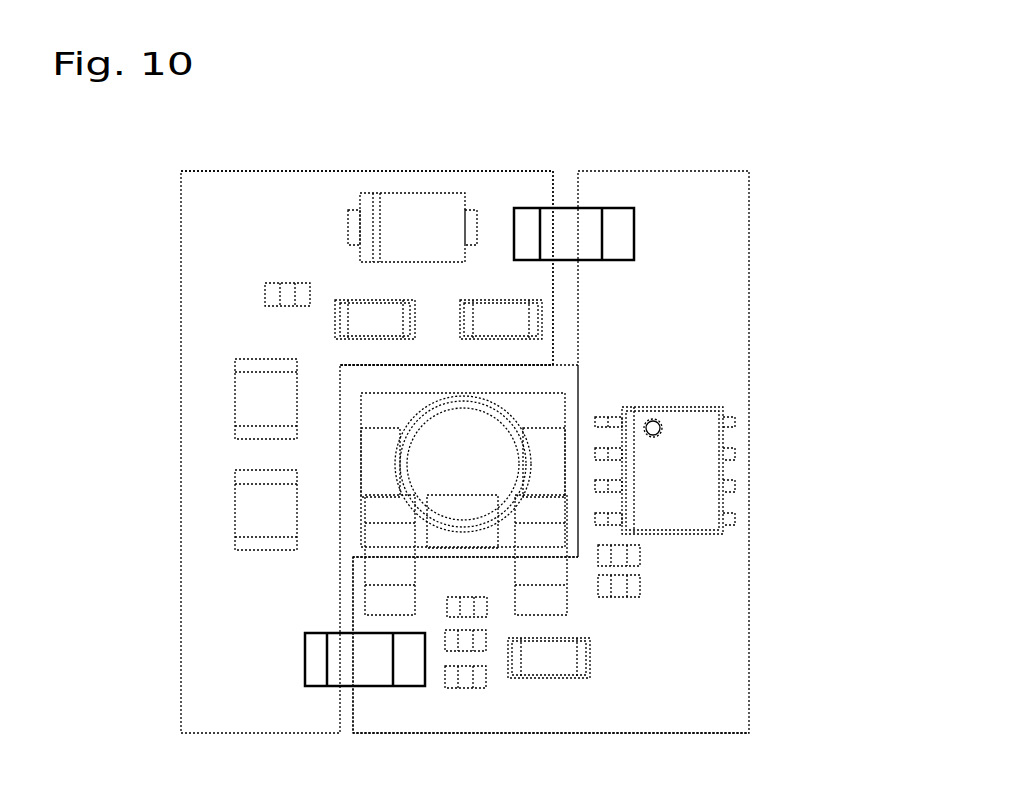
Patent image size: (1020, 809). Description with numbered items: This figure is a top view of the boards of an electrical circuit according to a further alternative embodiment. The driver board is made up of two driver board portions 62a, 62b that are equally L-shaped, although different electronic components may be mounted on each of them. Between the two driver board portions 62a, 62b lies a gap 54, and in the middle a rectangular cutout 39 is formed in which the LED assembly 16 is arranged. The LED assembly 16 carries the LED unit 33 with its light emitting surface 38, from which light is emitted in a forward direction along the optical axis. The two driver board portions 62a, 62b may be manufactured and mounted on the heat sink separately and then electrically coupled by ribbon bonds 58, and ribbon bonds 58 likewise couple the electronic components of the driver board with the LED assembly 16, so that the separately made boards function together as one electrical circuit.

The driver board portion 62a is at (706, 185).
The driver board portion 62b is at (222, 277).
The gap 54 is at (556, 320).
The rectangular cutout 39 is at (508, 378).
The LED assembly 16 is at (468, 476).
The light emitting surface 38 is at (455, 495).
The LED unit 33 is at (512, 494).
The ribbon bonds 58 is at (402, 573).